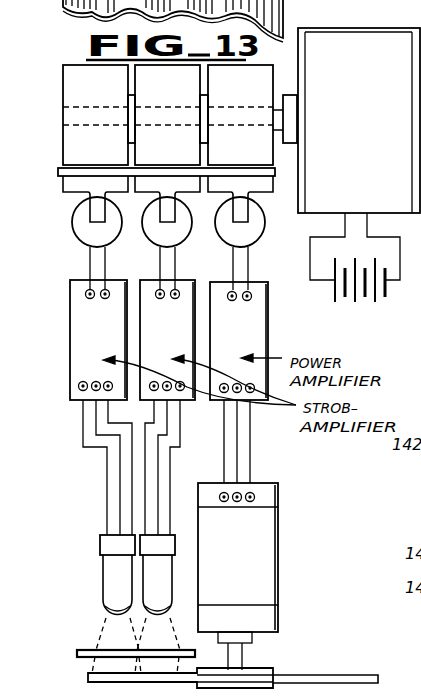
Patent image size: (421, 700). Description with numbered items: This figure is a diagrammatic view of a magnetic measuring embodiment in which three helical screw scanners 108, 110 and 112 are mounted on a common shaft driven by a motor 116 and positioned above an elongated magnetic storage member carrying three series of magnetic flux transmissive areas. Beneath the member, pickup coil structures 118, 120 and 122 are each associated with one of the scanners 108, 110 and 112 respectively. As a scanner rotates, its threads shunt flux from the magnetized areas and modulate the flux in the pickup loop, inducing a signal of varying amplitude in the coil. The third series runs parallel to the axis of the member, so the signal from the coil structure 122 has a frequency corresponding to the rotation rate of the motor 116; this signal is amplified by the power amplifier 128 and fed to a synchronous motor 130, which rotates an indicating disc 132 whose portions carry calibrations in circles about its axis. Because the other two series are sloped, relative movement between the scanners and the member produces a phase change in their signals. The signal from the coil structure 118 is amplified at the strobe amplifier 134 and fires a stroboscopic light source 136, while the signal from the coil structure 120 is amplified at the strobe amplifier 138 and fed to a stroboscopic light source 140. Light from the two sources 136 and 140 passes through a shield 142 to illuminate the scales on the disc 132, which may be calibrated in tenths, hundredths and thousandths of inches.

The scanner 108 is at (110, 98).
The scanner 110 is at (182, 98).
The scanner 112 is at (255, 98).
The motor 116 is at (380, 44).
The pickup coil structure 118 is at (77, 231).
The pickup coil structure 120 is at (152, 230).
The pickup coil structure 122 is at (228, 230).
The amplifier 128 is at (262, 342).
The synchronous motor 130 is at (267, 538).
The indicating disc 132 is at (315, 675).
The amplifier 134 is at (78, 335).
The stroboscopic light source 136 is at (100, 568).
The amplifier 138 is at (181, 331).
The stroboscopic light source 140 is at (168, 538).
The shield 142 is at (84, 649).